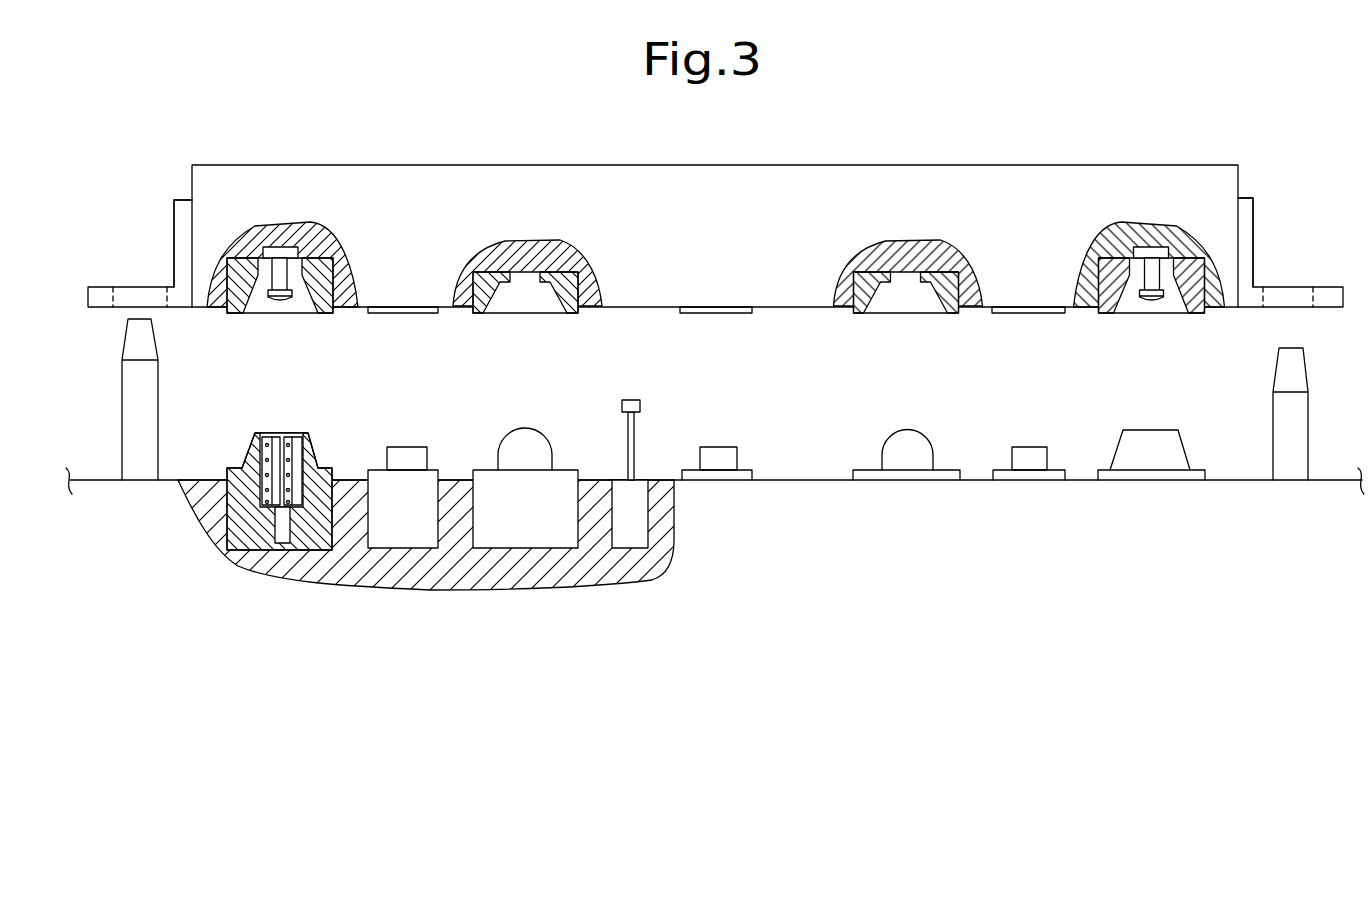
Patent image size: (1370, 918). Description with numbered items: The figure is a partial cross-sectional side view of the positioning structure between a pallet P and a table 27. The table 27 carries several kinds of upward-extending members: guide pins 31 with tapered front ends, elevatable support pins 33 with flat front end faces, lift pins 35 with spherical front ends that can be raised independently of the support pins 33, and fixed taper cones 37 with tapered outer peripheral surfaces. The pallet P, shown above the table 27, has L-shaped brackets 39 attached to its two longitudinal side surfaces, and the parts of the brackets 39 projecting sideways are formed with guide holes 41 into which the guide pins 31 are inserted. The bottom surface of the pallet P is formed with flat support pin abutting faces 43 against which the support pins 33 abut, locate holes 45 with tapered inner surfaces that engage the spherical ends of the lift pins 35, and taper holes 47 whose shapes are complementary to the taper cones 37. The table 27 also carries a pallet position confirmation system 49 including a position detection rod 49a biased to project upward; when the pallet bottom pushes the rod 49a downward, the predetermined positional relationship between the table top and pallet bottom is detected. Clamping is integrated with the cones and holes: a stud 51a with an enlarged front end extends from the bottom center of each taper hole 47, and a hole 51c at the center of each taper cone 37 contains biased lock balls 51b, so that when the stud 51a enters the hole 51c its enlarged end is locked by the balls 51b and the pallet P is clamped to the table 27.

The pallet P is at (1098, 183).
The table 27 is at (800, 512).
The guide pin 31 is at (130, 410).
The support pin 33 is at (410, 452).
The lift pin 35 is at (522, 438).
The taper cone 37 is at (246, 455).
The L-shaped bracket 39 is at (178, 210).
The guide hole 41 is at (122, 292).
The support pin abutting face 43 is at (405, 315).
The locate hole 45 is at (536, 303).
The taper hole 47 is at (257, 312).
The pallet position confirmation system 49 is at (625, 495).
The position detection rod 49a is at (634, 433).
The stud 51a is at (290, 283).
The lock ball 51b is at (265, 440).
The hole 51c is at (293, 440).